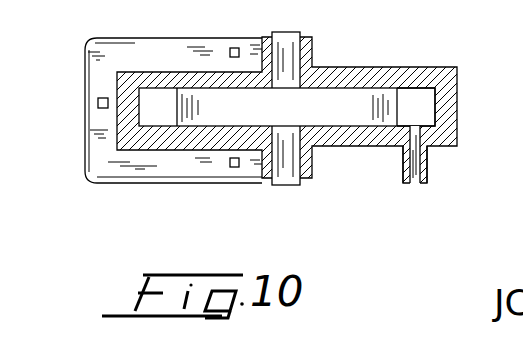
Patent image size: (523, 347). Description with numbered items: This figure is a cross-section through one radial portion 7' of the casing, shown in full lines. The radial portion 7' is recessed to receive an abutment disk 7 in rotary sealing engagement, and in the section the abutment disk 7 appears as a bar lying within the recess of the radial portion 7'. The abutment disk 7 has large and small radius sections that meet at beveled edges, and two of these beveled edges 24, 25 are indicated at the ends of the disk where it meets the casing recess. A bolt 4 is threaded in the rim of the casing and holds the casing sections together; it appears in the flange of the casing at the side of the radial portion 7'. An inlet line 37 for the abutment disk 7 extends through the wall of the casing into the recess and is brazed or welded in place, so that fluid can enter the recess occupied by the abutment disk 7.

The bolt 4 is at (97, 103).
The radial portion of the casing 7' is at (287, 107).
The abutment disk 7 is at (287, 107).
The beveled edge 25 is at (162, 100).
The beveled edge 24 is at (418, 105).
The inlet line 37 is at (427, 162).